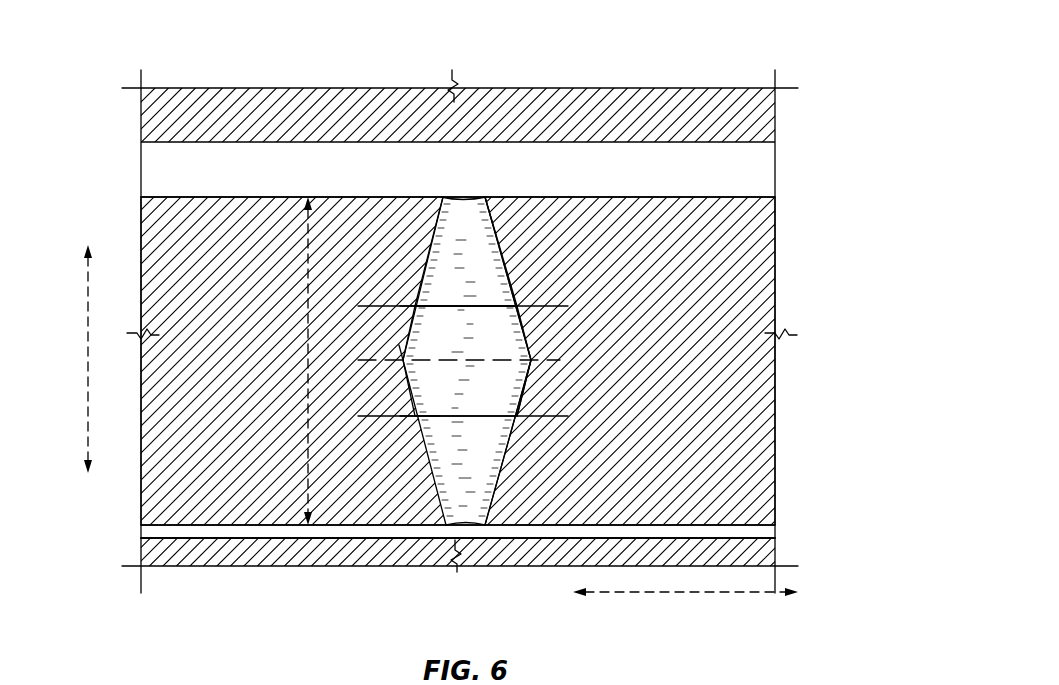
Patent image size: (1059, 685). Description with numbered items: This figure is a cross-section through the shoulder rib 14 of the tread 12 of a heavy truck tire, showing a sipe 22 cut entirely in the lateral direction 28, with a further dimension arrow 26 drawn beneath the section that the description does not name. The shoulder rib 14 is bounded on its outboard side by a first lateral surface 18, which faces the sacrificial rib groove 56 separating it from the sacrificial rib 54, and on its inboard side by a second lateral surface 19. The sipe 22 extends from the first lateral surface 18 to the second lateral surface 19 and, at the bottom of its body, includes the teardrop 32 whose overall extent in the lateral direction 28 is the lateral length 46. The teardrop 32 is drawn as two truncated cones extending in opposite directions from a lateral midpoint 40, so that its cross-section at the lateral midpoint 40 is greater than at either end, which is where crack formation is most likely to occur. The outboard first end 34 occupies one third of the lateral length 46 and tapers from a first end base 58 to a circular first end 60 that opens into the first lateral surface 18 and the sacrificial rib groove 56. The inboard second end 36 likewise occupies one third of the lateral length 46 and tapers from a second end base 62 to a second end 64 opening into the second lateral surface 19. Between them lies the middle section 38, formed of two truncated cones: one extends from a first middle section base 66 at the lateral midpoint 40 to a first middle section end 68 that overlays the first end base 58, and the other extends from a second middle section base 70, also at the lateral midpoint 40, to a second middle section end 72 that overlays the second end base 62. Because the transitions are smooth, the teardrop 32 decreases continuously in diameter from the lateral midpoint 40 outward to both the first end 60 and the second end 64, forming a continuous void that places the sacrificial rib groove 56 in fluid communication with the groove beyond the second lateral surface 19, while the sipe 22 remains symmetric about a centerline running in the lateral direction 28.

The tread 12 is at (815, 54).
The shoulder rib 14 is at (765, 263).
The first lateral surface 18 is at (190, 525).
The second lateral surface 19 is at (623, 197).
The sipe 22 is at (483, 238).
The horizontal direction 26 is at (663, 593).
The lateral direction 28 is at (88, 365).
The teardrop 32 is at (503, 298).
The first end 34 is at (503, 462).
The second end 36 is at (507, 270).
The middle section 38 is at (527, 380).
The lateral midpoint 40 is at (513, 360).
The lateral length 46 is at (308, 315).
The sacrificial rib 54 is at (272, 557).
The sacrificial rib groove 56 is at (343, 533).
The first end base 58 is at (425, 416).
The first end 60 is at (463, 525).
The second end base 62 is at (424, 306).
The second end 64 is at (463, 197).
The first middle section base 66 is at (405, 362).
The first middle section end 68 is at (450, 416).
The second middle section base 70 is at (422, 360).
The second middle section end 72 is at (449, 306).